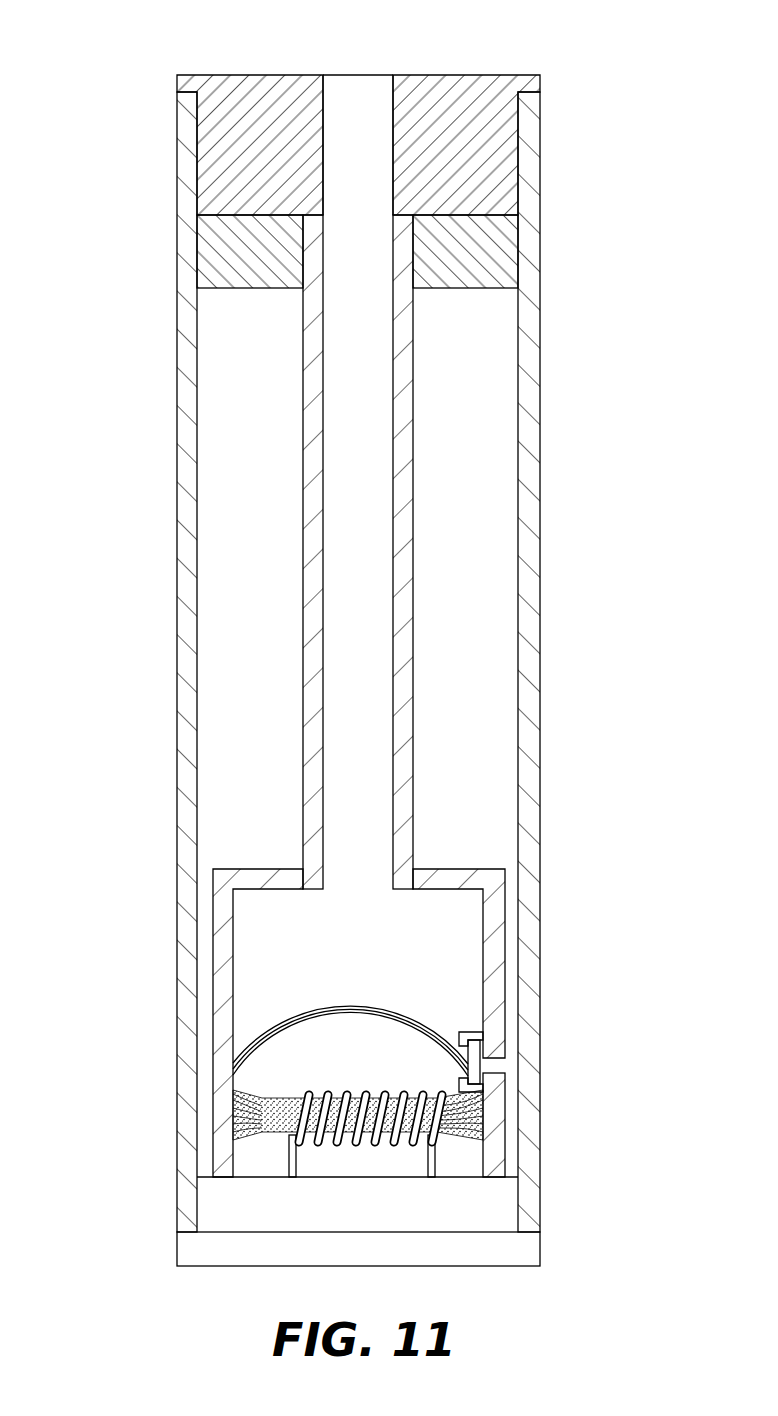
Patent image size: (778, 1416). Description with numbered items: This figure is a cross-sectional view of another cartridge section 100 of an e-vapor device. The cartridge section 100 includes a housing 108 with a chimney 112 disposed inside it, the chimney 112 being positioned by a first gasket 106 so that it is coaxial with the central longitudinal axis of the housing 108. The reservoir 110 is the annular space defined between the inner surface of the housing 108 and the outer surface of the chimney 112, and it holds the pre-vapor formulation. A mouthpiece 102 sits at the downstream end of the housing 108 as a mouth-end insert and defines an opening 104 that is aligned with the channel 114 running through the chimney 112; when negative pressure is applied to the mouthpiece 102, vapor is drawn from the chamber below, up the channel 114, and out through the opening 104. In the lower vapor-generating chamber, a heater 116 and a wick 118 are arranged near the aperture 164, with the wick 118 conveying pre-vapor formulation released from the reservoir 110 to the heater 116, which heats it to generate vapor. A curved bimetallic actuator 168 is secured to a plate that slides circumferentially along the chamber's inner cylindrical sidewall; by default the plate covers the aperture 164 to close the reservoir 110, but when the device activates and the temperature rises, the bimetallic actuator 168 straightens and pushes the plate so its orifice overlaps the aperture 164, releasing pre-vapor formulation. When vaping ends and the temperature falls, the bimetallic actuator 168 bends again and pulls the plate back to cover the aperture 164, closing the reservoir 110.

The cartridge section 100 is at (92, 54).
The mouthpiece 102 is at (490, 90).
The opening 104 is at (357, 95).
The first gasket 106 is at (473, 250).
The housing 108 is at (525, 418).
The reservoir 110 is at (240, 493).
The chimney 112 is at (400, 627).
The channel 114 is at (345, 662).
The heater 116 is at (290, 1140).
The wick 118 is at (272, 1095).
The aperture 164 is at (490, 1063).
The bimetallic actuator 168 is at (280, 1002).